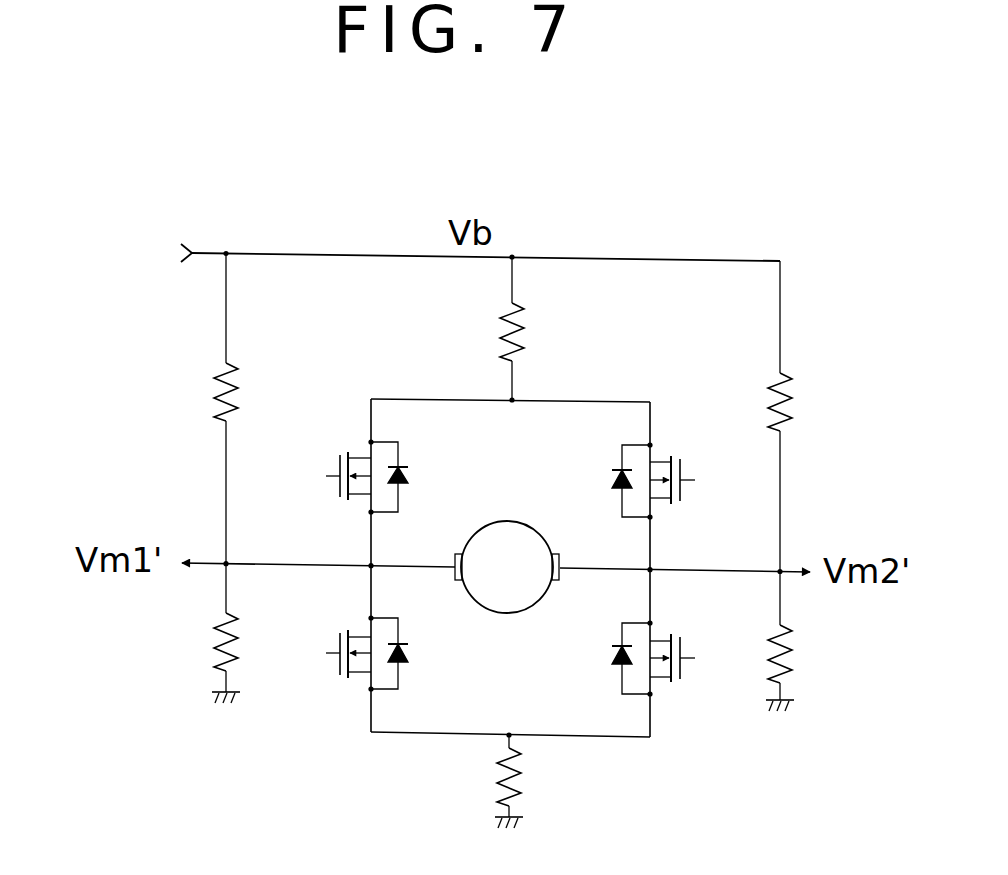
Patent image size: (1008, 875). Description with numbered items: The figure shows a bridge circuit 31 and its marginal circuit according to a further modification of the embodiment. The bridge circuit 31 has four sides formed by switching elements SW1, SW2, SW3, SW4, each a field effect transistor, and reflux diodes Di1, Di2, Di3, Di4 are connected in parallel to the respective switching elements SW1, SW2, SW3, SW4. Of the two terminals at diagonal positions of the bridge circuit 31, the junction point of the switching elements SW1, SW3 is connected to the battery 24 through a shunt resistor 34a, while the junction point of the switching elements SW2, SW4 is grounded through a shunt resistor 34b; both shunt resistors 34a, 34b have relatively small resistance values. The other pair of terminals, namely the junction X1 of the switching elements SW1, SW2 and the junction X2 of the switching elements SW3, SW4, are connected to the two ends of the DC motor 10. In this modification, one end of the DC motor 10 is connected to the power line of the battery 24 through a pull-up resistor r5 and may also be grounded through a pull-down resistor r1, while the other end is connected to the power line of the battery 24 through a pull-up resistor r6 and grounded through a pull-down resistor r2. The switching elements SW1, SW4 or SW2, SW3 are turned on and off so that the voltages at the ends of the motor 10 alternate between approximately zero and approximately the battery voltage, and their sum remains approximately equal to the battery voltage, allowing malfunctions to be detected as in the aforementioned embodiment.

The battery 24 is at (120, 253).
The bridge circuit 31 is at (614, 392).
The shunt resistor 34a is at (548, 328).
The shunt resistor 34b is at (546, 781).
The DC motor 10 is at (498, 612).
The switching element SW1 is at (312, 477).
The switching element SW2 is at (312, 653).
The switching element SW3 is at (709, 482).
The switching element SW4 is at (687, 678).
The reflux diode Di1 is at (422, 476).
The reflux diode Di2 is at (420, 654).
The reflux diode Di3 is at (596, 481).
The reflux diode Di4 is at (599, 658).
The pull-down resistor r1 is at (194, 642).
The pull-down resistor r2 is at (806, 654).
The pull-up resistor r5 is at (255, 392).
The pull-up resistor r6 is at (808, 402).
The motor terminal node X1 is at (415, 559).
The motor terminal node X2 is at (603, 561).